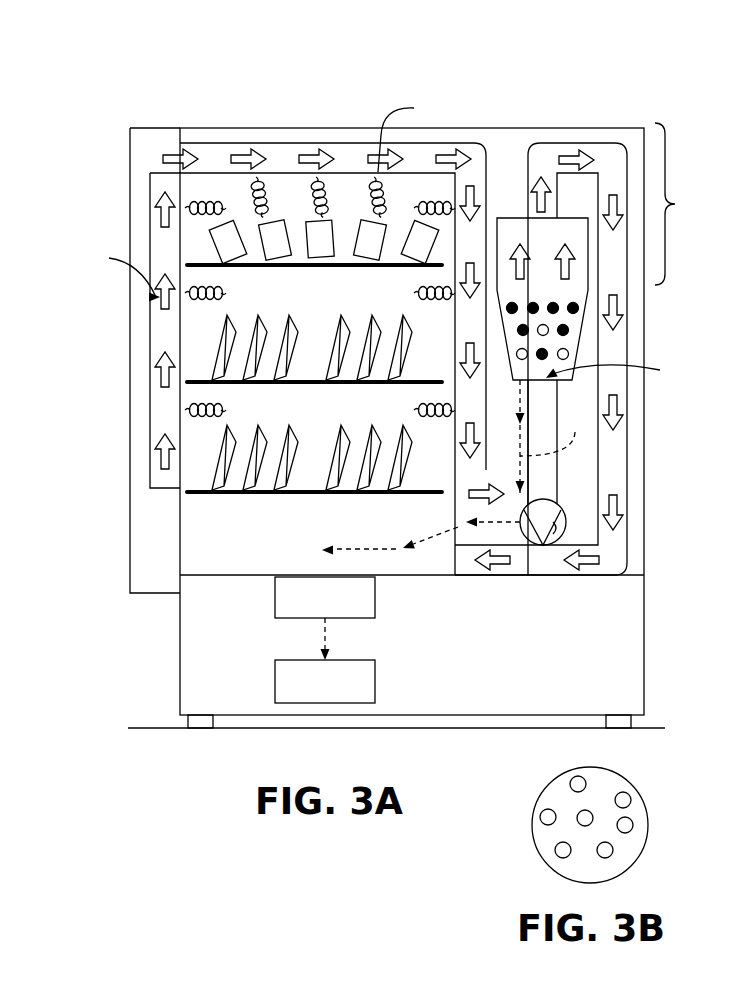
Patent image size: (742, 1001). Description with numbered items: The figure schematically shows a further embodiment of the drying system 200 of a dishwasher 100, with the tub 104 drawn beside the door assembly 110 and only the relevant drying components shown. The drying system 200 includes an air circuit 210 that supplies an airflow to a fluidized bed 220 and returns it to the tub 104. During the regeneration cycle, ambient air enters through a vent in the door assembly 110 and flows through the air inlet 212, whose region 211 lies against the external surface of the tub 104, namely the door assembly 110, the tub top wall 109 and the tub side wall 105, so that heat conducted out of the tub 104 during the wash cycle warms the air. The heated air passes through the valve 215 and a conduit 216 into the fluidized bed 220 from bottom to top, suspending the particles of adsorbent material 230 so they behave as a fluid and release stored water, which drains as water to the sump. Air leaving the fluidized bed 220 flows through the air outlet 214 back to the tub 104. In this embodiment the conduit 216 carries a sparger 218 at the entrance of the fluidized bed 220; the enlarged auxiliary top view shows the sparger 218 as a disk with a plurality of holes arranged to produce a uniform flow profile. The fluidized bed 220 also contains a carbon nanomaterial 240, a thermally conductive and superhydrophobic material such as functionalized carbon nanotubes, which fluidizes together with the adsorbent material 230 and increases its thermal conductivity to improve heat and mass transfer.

In FIG. 3A, the dishwasher 100 is at (144, 76).
In FIG. 3A, the tub 104 is at (192, 643).
In FIG. 3A, the tub side wall 105 is at (314, 356).
In FIG. 3A, the tub top wall 109 is at (282, 172).
In FIG. 3A, the door assembly 110 is at (144, 466).
In FIG. 3A, the drying system 200 is at (564, 84).
In FIG. 3A, the air circuit 210 is at (488, 178).
In FIG. 3A, the region 211 is at (148, 166).
In FIG. 3A, the air inlet 212 is at (482, 84).
In FIG. 3A, the air outlet 214 is at (690, 204).
In FIG. 3A, the valve 215 is at (557, 541).
In FIG. 3A, the conduit 216 is at (557, 478).
In FIG. 3B, the sparger 218 is at (628, 777).
In FIG. 3A, the fluidized bed 220 is at (575, 374).
In FIG. 3A, the adsorbent material 230 is at (572, 324).
In FIG. 3A, the carbon nanomaterial 240 is at (569, 354).